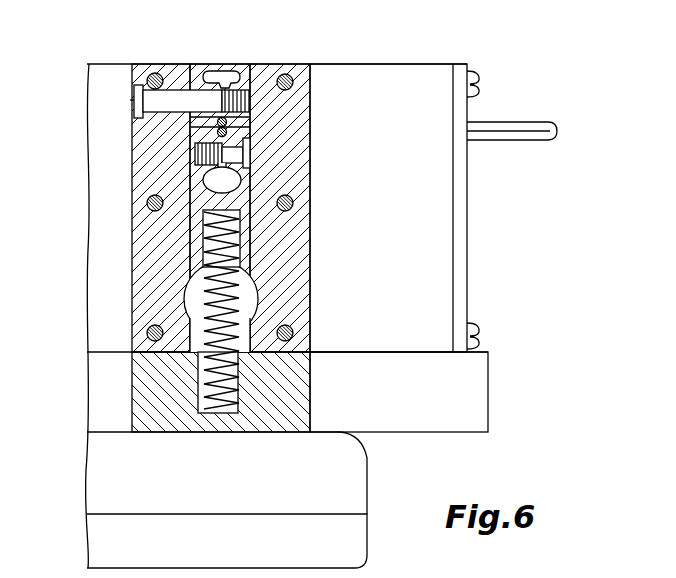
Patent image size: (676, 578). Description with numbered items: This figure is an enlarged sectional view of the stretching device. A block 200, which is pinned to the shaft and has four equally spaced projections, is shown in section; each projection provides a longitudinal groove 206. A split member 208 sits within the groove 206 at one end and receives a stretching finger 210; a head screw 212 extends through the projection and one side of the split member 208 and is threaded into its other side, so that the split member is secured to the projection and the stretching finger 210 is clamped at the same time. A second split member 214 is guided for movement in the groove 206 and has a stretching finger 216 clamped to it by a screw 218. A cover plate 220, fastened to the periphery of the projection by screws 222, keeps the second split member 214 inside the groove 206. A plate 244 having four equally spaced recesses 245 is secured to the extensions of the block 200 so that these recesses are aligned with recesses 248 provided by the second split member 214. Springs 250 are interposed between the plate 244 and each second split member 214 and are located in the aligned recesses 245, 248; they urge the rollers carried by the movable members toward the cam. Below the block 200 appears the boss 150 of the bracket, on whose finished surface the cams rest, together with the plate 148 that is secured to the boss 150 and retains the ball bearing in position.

The plate 148 is at (357, 542).
The boss 150 is at (357, 485).
The block 200 is at (438, 285).
The longitudinal groove 206 is at (250, 250).
The split member 208 is at (243, 70).
The stretching finger 210 is at (250, 119).
The head screw 212 is at (168, 100).
The second split member 214 is at (243, 198).
The stretching finger 216 is at (250, 133).
The screw 218 is at (250, 153).
The cover plate 220 is at (470, 246).
The screws 222 is at (470, 331).
The plate 244 is at (475, 377).
The recesses 245 is at (205, 383).
The recesses 248 is at (192, 250).
The springs 250 is at (254, 303).